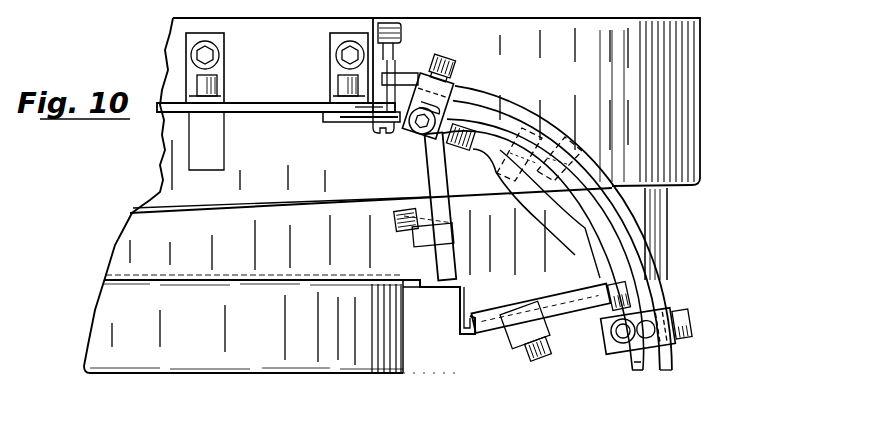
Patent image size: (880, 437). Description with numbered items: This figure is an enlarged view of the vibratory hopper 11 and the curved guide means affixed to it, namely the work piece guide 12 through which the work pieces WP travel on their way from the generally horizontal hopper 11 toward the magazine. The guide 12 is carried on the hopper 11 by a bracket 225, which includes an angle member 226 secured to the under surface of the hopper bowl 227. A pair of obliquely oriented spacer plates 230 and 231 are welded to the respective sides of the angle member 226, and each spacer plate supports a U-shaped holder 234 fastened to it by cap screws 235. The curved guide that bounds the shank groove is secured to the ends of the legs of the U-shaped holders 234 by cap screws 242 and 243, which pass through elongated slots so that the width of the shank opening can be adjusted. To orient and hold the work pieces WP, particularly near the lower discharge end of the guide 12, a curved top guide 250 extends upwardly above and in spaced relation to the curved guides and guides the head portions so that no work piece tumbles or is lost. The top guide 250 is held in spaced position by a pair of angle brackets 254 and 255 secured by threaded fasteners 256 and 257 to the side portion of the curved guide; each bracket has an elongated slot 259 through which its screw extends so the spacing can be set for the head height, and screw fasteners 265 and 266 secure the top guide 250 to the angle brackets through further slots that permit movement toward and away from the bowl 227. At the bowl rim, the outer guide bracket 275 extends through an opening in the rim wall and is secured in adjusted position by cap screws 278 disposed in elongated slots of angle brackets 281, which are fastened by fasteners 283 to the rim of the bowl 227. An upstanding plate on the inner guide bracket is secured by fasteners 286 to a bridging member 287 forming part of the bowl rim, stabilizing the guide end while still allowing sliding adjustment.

The vibratory hopper 11 is at (136, 185).
The work piece guide 12 is at (630, 228).
The bracket 225 is at (446, 350).
The angle member 226 is at (440, 293).
The hopper bowl 227 is at (660, 92).
The spacer plate 230 is at (447, 250).
The spacer plate 231 is at (483, 322).
The U-shaped holder 234 is at (432, 192).
The cap screw 235 is at (397, 226).
The cap screw 242 is at (497, 150).
The cap screw 243 is at (630, 288).
The top guide 250 is at (562, 128).
The angle bracket 254 is at (470, 106).
The angle bracket 255 is at (650, 305).
The threaded fastener 256 is at (412, 136).
The threaded fastener 257 is at (623, 340).
The elongated slot 259 is at (441, 142).
The screw fastener 265 is at (455, 66).
The screw fastener 266 is at (690, 322).
The outer guide bracket 275 is at (250, 105).
The cap screw 278 is at (340, 84).
The angle bracket 281 is at (335, 66).
The fastener 283 is at (350, 53).
The fastener 286 is at (402, 34).
The bridging member 287 is at (384, 69).
The work piece WP is at (590, 152).